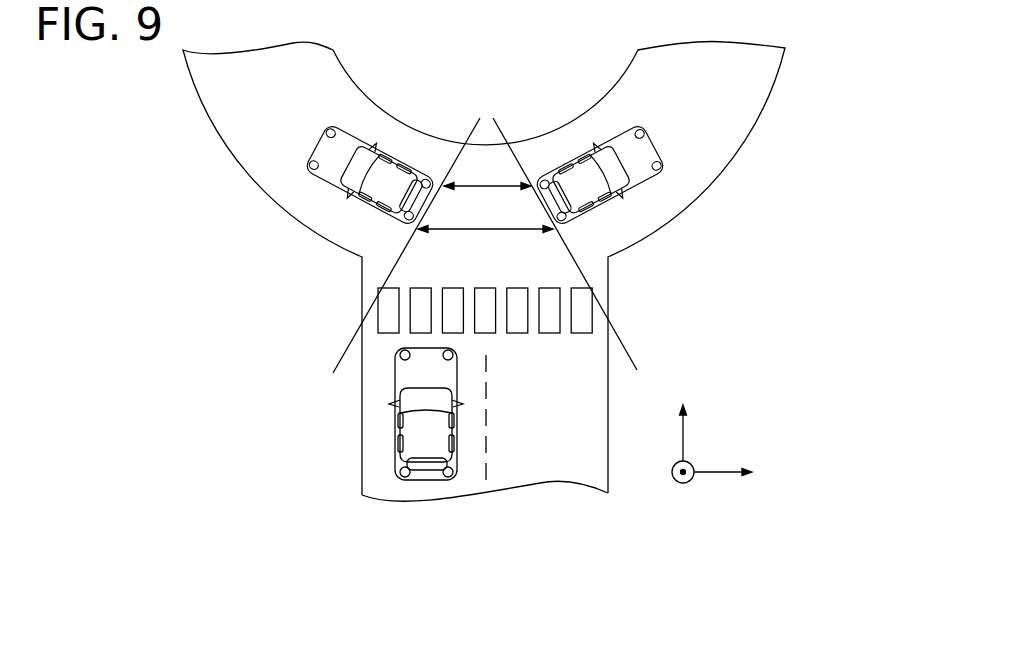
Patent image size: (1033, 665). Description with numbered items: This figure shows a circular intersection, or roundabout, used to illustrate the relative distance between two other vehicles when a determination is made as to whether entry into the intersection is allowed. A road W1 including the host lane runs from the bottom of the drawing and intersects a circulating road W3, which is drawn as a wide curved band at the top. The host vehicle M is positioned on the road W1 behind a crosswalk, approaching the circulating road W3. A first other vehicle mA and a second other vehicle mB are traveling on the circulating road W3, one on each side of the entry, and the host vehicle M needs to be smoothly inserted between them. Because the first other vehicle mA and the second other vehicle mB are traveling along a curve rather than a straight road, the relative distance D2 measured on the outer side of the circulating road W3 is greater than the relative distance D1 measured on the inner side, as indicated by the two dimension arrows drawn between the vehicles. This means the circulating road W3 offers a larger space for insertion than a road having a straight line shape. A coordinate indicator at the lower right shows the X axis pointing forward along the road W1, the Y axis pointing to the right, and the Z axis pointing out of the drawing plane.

The circulating road W3 is at (257, 125).
The road W1 is at (608, 515).
The host vehicle M is at (395, 405).
The first other vehicle mA is at (357, 205).
The second other vehicle mB is at (627, 193).
The relative distance on the inner side D1 is at (487, 204).
The relative distance on the outer side D2 is at (485, 247).
The X axis X is at (684, 416).
The Y axis Y is at (733, 469).
The Z axis Z is at (675, 486).